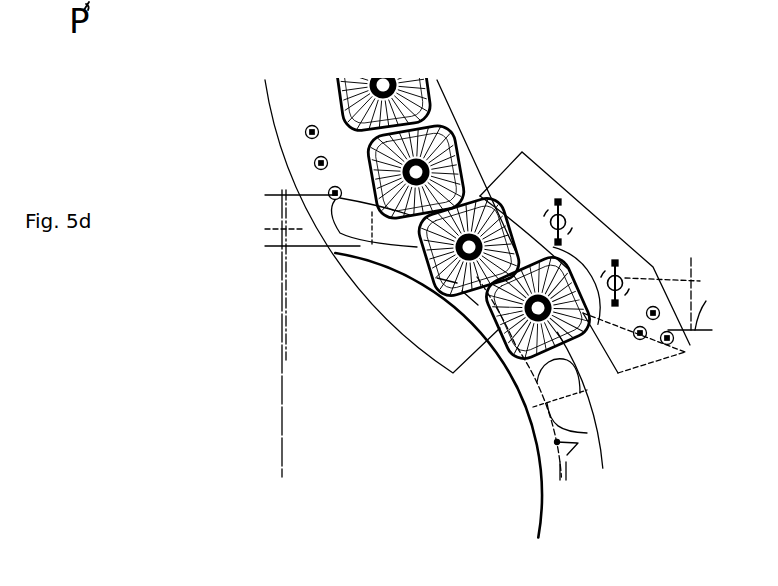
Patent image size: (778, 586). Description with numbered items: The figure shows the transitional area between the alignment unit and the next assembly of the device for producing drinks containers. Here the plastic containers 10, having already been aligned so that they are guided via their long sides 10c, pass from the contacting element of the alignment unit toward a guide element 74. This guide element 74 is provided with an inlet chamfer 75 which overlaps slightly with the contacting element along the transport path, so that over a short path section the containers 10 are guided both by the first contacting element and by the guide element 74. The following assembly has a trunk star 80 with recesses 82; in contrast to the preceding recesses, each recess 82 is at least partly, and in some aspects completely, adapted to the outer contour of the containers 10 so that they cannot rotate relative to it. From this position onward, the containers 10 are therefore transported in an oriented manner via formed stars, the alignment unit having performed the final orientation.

The containers 10 is at (445, 147).
The long sides 10c is at (458, 158).
The guide element 74 is at (587, 223).
The inlet chamfer 75 is at (460, 200).
The trunk star 80 is at (340, 405).
The recesses 82 is at (347, 222).